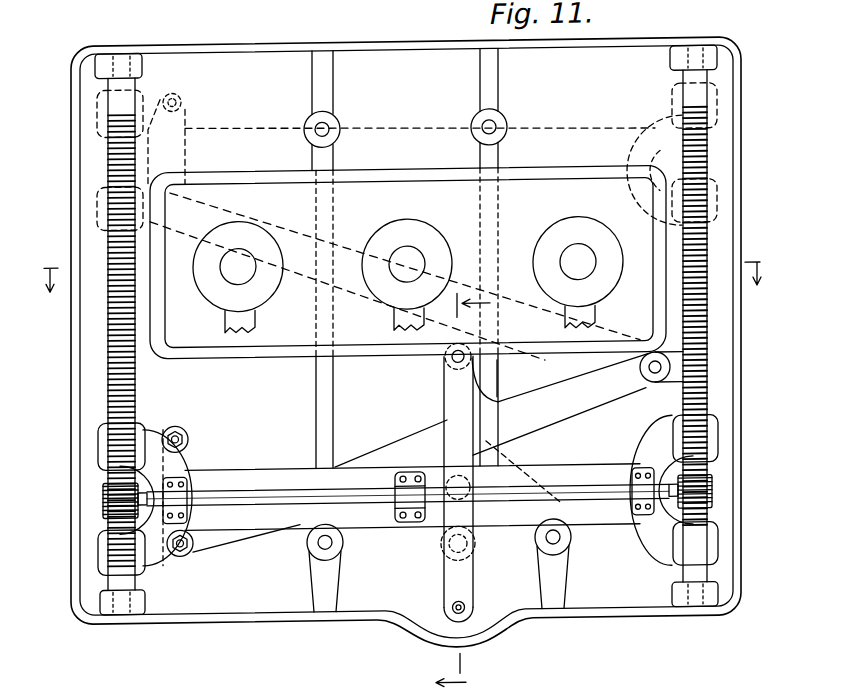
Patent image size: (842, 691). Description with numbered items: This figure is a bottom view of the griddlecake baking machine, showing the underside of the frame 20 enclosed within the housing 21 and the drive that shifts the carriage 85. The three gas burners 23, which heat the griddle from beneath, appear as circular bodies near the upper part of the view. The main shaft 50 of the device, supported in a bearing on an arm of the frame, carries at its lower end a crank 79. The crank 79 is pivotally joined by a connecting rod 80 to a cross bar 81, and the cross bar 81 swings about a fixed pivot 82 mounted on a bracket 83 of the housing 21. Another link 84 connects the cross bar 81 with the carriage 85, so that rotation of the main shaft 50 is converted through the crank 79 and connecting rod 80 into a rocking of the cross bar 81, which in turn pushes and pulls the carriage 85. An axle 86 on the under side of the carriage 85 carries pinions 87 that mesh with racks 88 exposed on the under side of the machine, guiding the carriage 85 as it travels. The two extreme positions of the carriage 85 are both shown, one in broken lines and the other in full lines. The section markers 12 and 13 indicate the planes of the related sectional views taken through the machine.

The section line 12- 12 is at (398, 290).
The section line 13- 13 is at (467, 491).
The frame 20 is at (244, 65).
The housing 21 is at (66, 59).
The gas burners 23 is at (220, 295).
The main shaft 50 is at (476, 553).
The crank 79 is at (444, 590).
The connecting rod 80 is at (464, 590).
The cross bar 81 is at (375, 458).
The fixed pivot 82 is at (652, 393).
The bracket 83 is at (700, 362).
The link 84 is at (186, 458).
The carriage 85 is at (259, 131).
The axle 86 is at (223, 494).
The pinions 87 is at (103, 502).
The racks 88 is at (108, 386).